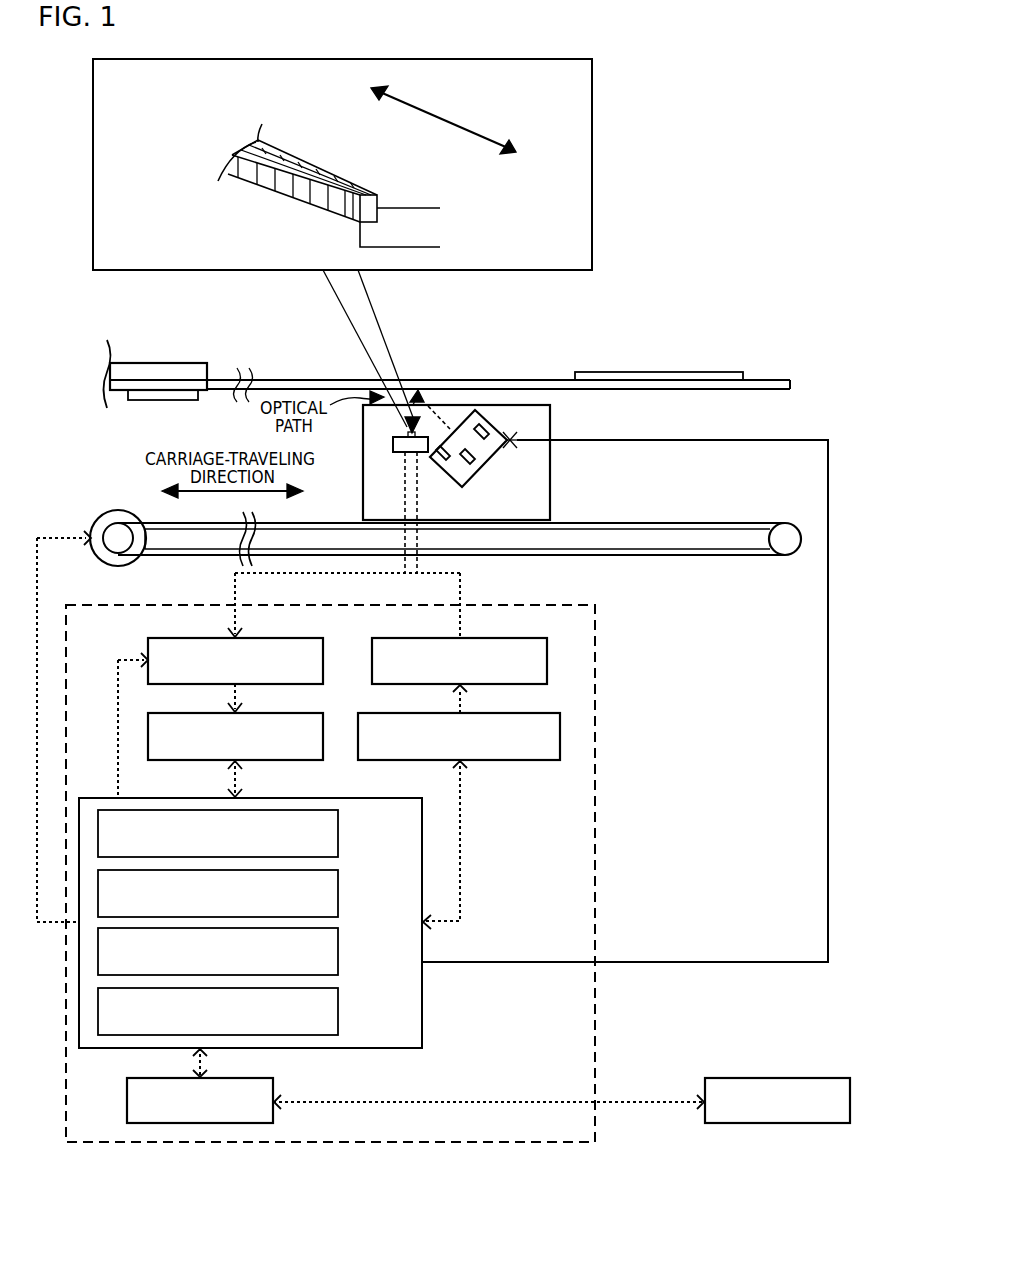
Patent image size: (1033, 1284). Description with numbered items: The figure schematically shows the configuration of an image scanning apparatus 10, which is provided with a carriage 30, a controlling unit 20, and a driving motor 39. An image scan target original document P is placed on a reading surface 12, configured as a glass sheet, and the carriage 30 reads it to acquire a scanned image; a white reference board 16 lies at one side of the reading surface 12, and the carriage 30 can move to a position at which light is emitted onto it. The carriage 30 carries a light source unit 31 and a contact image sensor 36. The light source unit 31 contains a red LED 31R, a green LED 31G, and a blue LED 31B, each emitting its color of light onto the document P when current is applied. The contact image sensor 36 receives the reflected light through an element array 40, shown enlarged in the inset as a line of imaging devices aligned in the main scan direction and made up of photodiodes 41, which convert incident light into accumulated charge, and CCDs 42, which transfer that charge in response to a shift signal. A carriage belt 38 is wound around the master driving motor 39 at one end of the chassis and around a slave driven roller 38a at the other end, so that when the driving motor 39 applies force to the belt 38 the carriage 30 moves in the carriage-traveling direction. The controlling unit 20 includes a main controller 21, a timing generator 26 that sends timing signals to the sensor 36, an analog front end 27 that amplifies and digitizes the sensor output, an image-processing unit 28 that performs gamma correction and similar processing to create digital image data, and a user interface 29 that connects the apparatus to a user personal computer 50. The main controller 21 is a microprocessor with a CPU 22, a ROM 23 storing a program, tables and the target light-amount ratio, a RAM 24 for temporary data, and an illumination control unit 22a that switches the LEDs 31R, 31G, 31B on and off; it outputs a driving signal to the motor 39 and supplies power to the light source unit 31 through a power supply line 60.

The image scanning apparatus 10 is at (707, 270).
The reading surface 12 is at (755, 378).
The white reference board 16 is at (180, 388).
The controlling unit 20 is at (600, 748).
The main controller 21 is at (290, 798).
The CPU 22 is at (340, 833).
The illumination control unit 22a is at (340, 1007).
The ROM 23 is at (340, 891).
The RAM 24 is at (340, 949).
The timing generator 26 is at (512, 638).
The analog front end 27 is at (290, 638).
The image-processing unit 28 is at (290, 713).
The user interface 29 is at (512, 713).
The carriage 30 is at (553, 437).
The light source unit 31 is at (494, 420).
The red LED 31R is at (443, 444).
The green LED 31G is at (466, 447).
The blue LED 31B is at (482, 424).
The contact image sensor 36 is at (393, 445).
The carriage belt 38 is at (705, 523).
The slave driven roller 38a is at (795, 555).
The driving motor 39 is at (110, 514).
The element array 40 is at (180, 128).
The photodiodes 41 is at (339, 224).
The CCDs 42 is at (371, 190).
The user personal computer 50 is at (770, 1078).
The power supply line 60 is at (710, 962).
The image scan target original document P is at (670, 374).